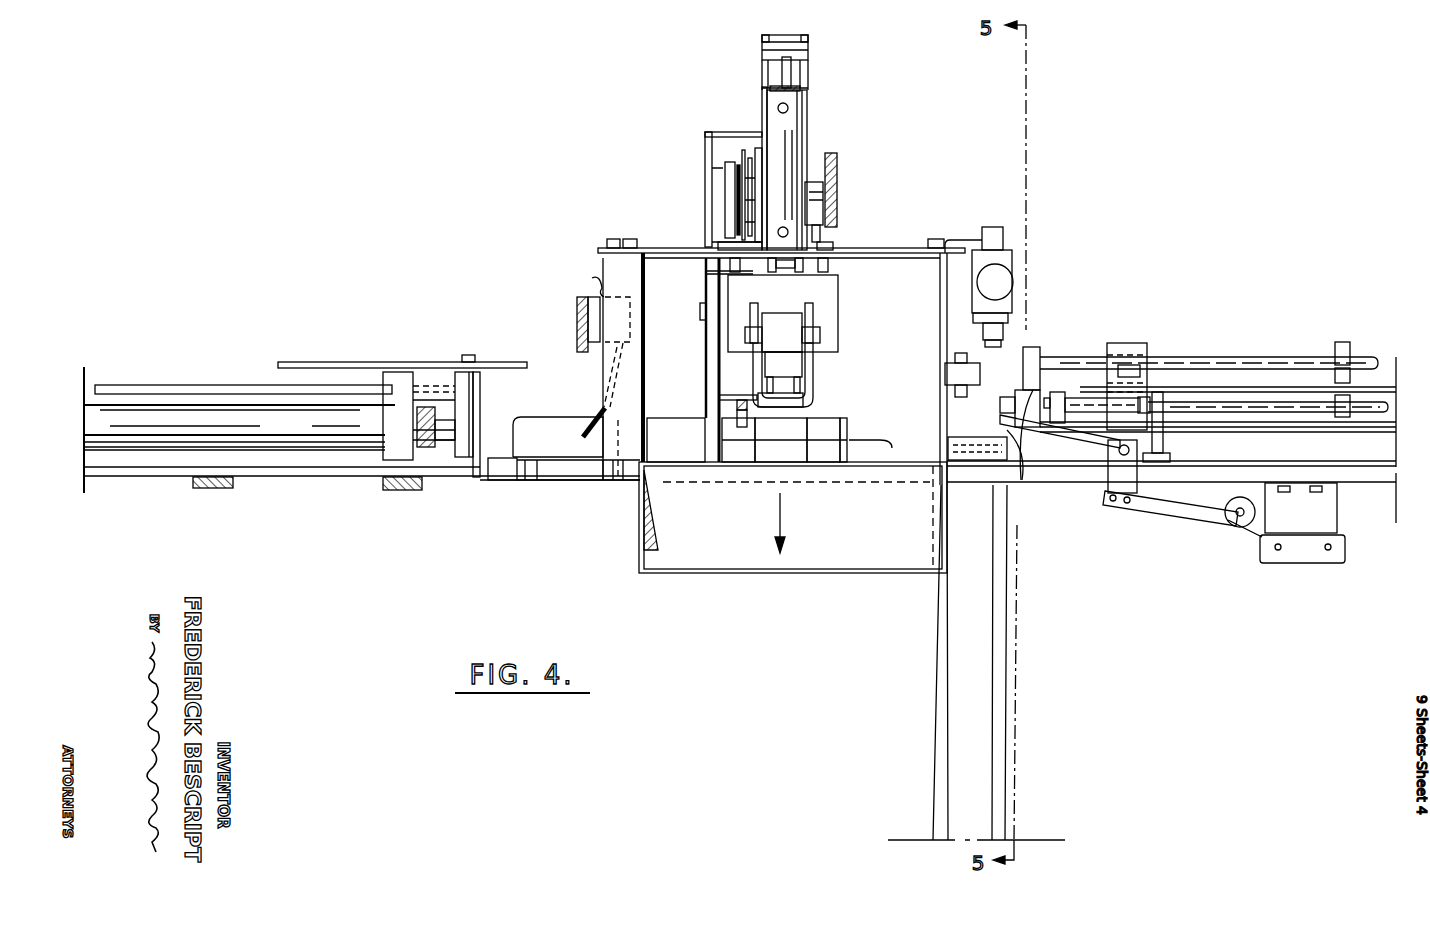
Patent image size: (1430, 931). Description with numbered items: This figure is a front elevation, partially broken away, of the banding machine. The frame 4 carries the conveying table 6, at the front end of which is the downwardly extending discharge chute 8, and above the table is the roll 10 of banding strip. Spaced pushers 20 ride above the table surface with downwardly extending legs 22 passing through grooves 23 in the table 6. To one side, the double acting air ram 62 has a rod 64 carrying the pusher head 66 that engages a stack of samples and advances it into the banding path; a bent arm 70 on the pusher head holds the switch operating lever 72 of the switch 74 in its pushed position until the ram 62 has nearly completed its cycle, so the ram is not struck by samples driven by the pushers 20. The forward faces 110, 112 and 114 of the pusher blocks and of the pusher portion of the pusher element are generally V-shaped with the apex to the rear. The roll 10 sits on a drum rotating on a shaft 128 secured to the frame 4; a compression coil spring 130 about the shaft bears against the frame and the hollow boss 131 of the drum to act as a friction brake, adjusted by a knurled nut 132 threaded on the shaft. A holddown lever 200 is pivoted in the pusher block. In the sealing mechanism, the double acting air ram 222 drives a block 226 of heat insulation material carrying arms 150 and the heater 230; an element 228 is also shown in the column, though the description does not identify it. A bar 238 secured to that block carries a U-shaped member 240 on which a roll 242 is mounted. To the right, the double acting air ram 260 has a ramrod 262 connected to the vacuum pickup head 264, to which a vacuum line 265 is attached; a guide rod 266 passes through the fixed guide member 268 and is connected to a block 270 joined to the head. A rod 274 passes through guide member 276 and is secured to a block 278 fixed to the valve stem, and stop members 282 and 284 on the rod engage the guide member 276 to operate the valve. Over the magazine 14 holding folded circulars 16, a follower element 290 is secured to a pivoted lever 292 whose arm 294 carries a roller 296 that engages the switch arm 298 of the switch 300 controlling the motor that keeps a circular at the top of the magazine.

The frame 4 is at (718, 188).
The conveying table 6 is at (504, 459).
The discharge chute 8 is at (836, 538).
The roll 10 is at (798, 65).
The magazine 14 is at (985, 404).
The folded circulars 16 is at (973, 460).
The pushers 20 is at (563, 425).
The legs 22 is at (528, 480).
The grooves 23 is at (517, 470).
The double acting air ram 62 is at (225, 372).
The rod 64 is at (448, 435).
The pusher head 66 is at (468, 384).
The bent arm 70 is at (338, 362).
The switch operating lever 72 is at (618, 368).
The switch 74 is at (590, 298).
The forward face 110 is at (728, 423).
The forward face 112 is at (766, 441).
The forward face 114 is at (811, 441).
The shaft 128 is at (746, 170).
The compression coil spring 130 is at (740, 165).
The hollow boss 131 is at (763, 218).
The knurled nut 132 is at (837, 173).
The arms 150 is at (753, 271).
The holddown lever 200 is at (740, 393).
The double acting air ram 222 is at (804, 102).
The block of heat insulation material 226 is at (838, 303).
The guide rod 228 is at (758, 188).
The heater 230 is at (828, 339).
The bar 238 is at (784, 319).
The U-shaped member 240 is at (813, 370).
The roll 242 is at (803, 408).
The double acting air ram 260 is at (1277, 332).
The ramrod 262 is at (1058, 391).
The vacuum pickup head 264 is at (1040, 391).
The vacuum line 265 is at (1038, 426).
The guide rod 266 is at (1306, 357).
The fixed guide member 268 is at (1130, 343).
The block 270 is at (1030, 347).
The rod 274 is at (1240, 414).
The guide member 276 is at (1150, 396).
The block 278 is at (1060, 398).
The stop member 282 is at (1150, 392).
The stop member 284 is at (1345, 417).
The follower element 290 is at (1022, 480).
The pivoted lever 292 is at (1082, 430).
The arm 294 is at (1170, 506).
The roller 296 is at (1230, 517).
The switch arm 298 is at (1258, 539).
The switch 300 is at (1300, 556).